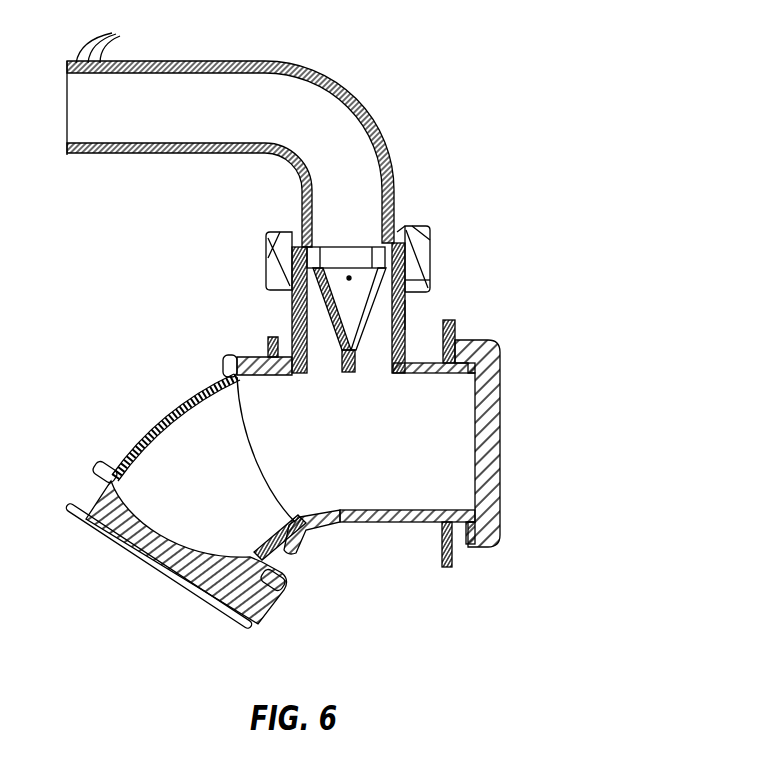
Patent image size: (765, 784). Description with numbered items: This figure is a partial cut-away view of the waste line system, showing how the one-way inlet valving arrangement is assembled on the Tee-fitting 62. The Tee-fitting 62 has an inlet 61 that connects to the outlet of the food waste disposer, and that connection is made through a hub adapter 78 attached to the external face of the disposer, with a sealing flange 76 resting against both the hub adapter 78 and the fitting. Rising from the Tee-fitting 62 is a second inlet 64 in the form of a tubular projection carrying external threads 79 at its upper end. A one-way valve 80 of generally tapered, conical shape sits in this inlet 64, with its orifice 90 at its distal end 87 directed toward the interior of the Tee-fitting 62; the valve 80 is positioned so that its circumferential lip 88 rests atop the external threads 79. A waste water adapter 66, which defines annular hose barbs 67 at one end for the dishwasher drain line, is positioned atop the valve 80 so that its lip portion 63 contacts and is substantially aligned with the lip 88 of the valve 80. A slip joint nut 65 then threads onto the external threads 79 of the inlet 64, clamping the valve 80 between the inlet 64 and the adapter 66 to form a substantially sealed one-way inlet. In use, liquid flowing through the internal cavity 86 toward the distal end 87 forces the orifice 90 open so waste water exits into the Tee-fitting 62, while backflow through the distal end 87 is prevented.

The inlet 61 is at (336, 483).
The Tee-fitting 62 is at (403, 522).
The lip portion 63 is at (397, 228).
The inlet 64 is at (407, 318).
The slip joint nut 65 is at (430, 280).
The waste water adapter 66 is at (374, 129).
The annular hose barbs 67 is at (112, 33).
The flange 76 is at (452, 328).
The hub adapter 78 is at (488, 540).
The external threads 79 is at (268, 272).
The one-way valve 80 is at (343, 372).
The internal cavity 86 is at (349, 276).
The distal end 87 is at (300, 234).
The circumferential lip 88 is at (422, 248).
The orifice 90 is at (347, 374).